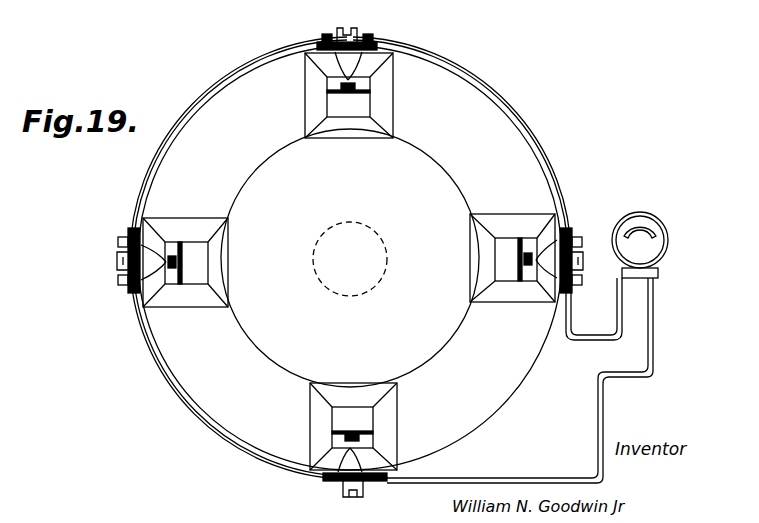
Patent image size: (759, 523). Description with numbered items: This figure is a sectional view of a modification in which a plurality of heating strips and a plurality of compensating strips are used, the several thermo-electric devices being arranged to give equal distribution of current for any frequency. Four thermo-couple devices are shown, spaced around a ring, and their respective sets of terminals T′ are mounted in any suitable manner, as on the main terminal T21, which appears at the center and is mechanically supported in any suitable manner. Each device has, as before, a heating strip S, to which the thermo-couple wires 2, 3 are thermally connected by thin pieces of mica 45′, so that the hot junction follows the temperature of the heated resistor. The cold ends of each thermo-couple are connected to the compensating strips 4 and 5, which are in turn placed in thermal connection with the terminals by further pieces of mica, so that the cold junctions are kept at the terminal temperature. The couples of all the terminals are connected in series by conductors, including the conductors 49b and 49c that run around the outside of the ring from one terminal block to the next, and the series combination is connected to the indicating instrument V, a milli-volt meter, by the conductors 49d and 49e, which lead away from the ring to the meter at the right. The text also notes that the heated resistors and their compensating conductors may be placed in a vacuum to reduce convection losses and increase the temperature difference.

The compensating strip 5 is at (320, 44).
The compensating strip 4 is at (387, 38).
The pieces of mica 45′ is at (373, 97).
The thermo-couple wire 2 is at (328, 80).
The thermo-couple wire 3 is at (370, 80).
The heating strip S is at (332, 92).
The conductor 49b is at (188, 108).
The conductor 49c is at (530, 123).
The conductor 49d is at (573, 300).
The conductor 49e is at (560, 477).
The terminals T′ is at (470, 220).
The main terminal T21 is at (328, 288).
The indicating instrument V is at (655, 252).